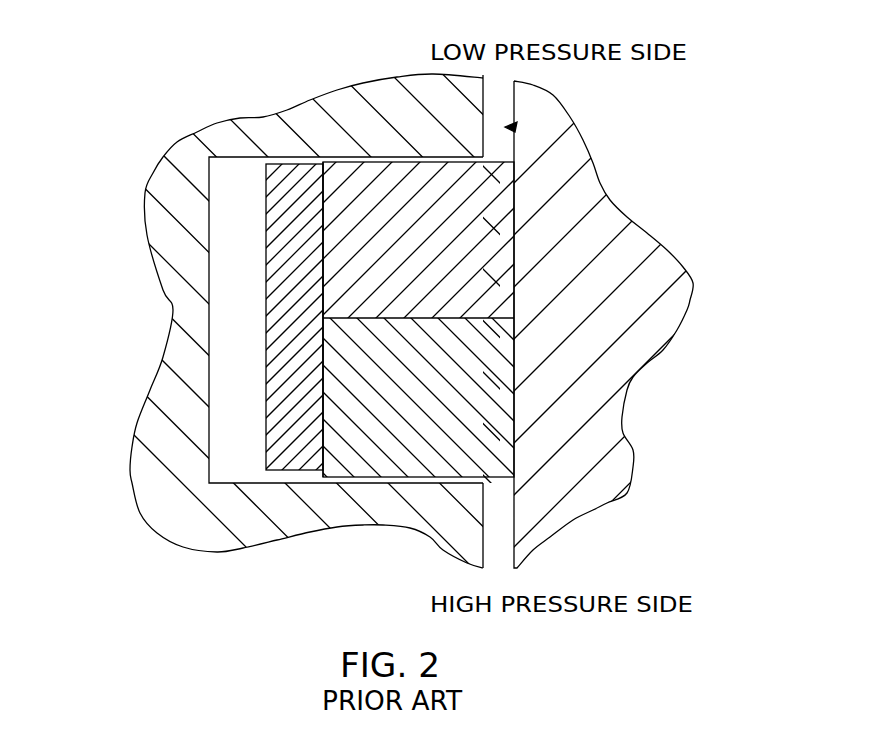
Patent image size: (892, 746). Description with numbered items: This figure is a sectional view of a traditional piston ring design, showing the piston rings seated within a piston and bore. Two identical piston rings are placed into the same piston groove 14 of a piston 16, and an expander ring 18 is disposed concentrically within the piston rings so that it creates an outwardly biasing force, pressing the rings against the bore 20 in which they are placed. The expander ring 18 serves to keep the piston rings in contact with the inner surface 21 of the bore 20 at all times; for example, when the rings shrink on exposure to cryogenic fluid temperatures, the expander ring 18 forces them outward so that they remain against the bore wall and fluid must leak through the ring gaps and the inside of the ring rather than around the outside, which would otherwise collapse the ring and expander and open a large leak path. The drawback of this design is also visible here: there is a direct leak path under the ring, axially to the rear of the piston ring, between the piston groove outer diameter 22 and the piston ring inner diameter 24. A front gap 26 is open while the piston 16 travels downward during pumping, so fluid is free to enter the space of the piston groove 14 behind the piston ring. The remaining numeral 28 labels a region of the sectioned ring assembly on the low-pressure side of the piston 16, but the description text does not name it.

The piston groove 14 is at (232, 310).
The piston 16 is at (167, 180).
The expander ring 18 is at (277, 268).
The bore 20 is at (667, 280).
The inner surface 21 is at (513, 125).
The piston groove outer diameter 22 is at (208, 400).
The piston ring inner diameter 24 is at (317, 423).
The front gap 26 is at (413, 477).
The low pressure side lip 28 is at (398, 160).